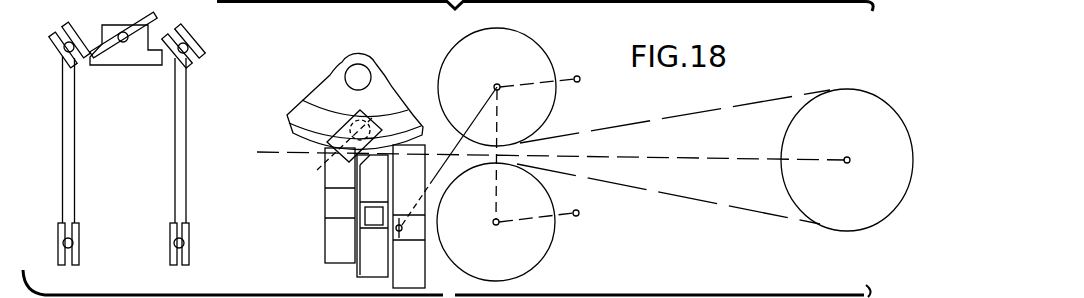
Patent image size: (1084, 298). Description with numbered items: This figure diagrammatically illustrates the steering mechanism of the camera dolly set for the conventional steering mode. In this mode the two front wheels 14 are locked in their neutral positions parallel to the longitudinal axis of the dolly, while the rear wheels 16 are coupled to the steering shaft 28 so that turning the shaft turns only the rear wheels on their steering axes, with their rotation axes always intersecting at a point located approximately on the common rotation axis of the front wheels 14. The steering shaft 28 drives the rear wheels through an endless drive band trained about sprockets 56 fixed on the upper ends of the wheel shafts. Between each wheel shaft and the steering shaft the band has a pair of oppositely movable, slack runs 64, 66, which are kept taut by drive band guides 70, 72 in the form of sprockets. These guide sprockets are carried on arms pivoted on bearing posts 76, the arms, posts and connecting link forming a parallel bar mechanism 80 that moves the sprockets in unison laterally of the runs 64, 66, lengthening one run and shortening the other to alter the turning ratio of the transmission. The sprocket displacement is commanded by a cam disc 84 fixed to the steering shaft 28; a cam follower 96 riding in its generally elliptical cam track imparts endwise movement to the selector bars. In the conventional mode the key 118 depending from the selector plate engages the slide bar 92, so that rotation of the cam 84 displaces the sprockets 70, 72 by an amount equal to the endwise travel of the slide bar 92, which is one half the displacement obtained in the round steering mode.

The front wheels 14 is at (58, 242).
The rear wheels 16 is at (55, 33).
The steering shaft 28 is at (133, 22).
The sprockets 56 is at (785, 175).
The drive band run 64 is at (679, 113).
The drive band run 66 is at (678, 200).
The drive band guide 70 is at (533, 36).
The drive band guide 72 is at (541, 264).
The bearing post 76 is at (580, 76).
The parallel bar mechanism 80 is at (566, 235).
The cam disc 84 is at (323, 85).
The slide bar 92 is at (363, 262).
The cam follower 96 is at (330, 157).
The key 118 is at (372, 218).